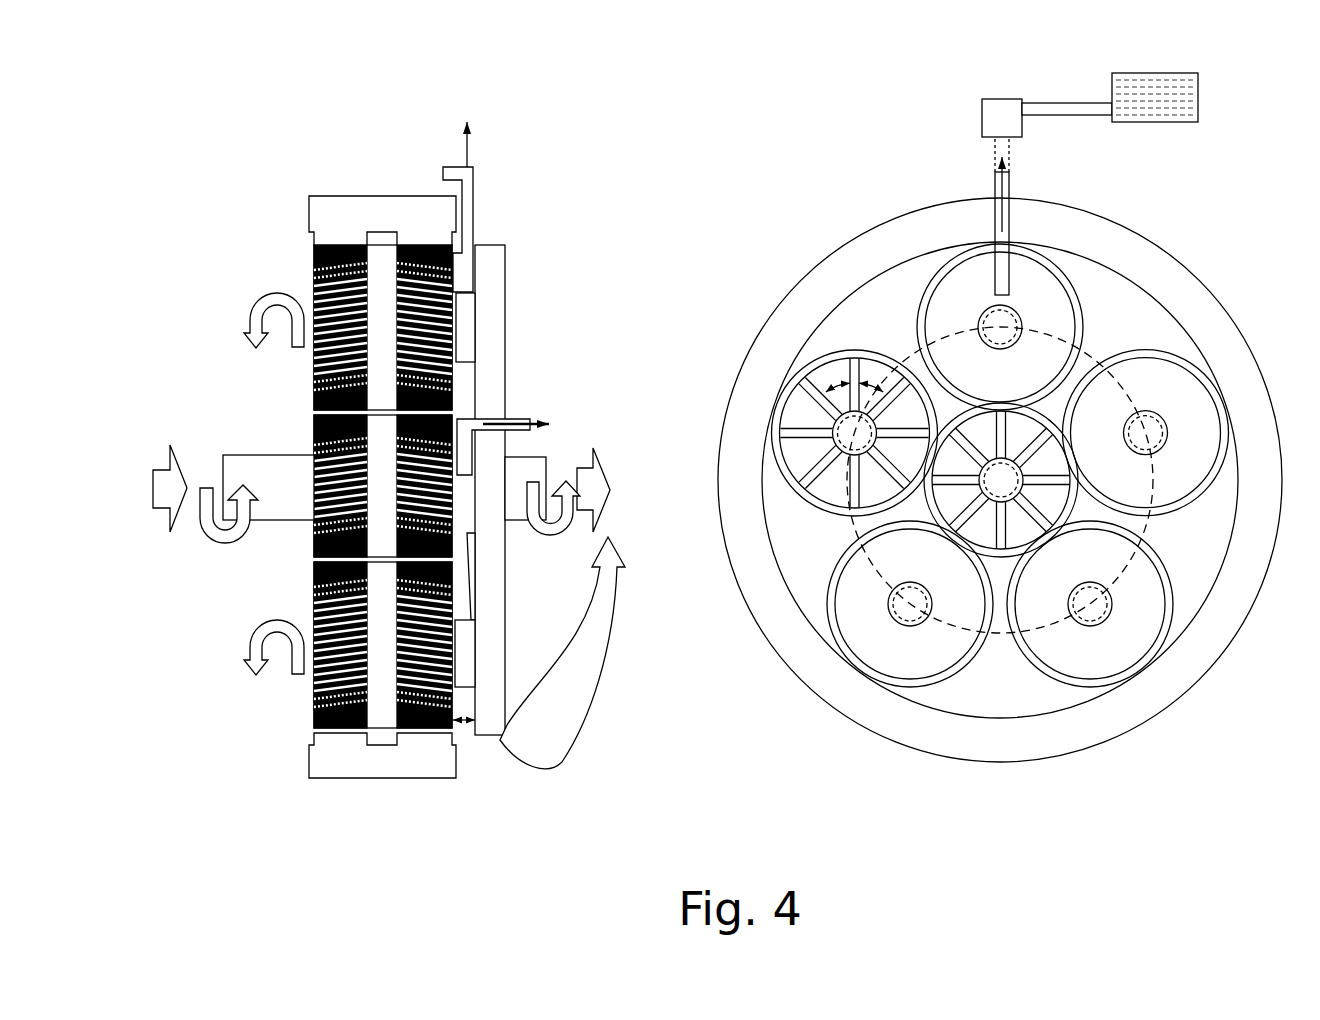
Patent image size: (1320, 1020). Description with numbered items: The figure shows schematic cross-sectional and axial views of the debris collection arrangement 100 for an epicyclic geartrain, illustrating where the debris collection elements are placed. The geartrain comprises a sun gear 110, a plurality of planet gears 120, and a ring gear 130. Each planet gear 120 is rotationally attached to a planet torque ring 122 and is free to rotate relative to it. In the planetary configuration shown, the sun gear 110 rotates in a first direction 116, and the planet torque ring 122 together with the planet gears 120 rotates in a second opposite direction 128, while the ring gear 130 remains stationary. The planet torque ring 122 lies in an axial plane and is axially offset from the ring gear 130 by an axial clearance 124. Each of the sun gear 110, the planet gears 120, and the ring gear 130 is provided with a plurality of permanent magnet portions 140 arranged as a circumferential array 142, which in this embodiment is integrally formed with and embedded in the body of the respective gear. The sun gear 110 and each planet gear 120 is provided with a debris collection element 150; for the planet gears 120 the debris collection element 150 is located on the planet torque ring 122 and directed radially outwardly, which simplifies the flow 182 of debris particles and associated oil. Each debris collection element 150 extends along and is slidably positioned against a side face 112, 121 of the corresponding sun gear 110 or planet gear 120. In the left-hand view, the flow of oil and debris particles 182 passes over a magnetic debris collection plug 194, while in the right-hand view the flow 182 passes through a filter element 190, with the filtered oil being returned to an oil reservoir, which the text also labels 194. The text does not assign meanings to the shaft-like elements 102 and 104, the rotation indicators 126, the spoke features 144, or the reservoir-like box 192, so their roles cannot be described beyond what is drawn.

The debris collection arrangement 100 is at (212, 206).
The first shaft 102 is at (289, 469).
The second shaft 104 is at (540, 458).
The sun gear 110 is at (313, 405).
The side face 112 is at (455, 510).
The first direction 116 is at (205, 533).
The planet gears 120 is at (314, 710).
The side face 121 is at (463, 366).
The planet torque ring 122 is at (497, 311).
The axial clearance 124 is at (463, 727).
The rotation direction 126 is at (283, 292).
The second opposite direction 128 is at (570, 766).
The ring gear 130 is at (392, 194).
The permanent magnet portions 140 is at (952, 497).
The circumferential array 142 is at (802, 422).
The radial spokes 144 is at (870, 378).
The debris collection element 150 is at (473, 205).
The flow of debris particles and oil 182 is at (462, 143).
The filter element 190 is at (1000, 97).
The reservoir 192 is at (1200, 90).
The magnetic debris collection plug 194 is at (446, 170).